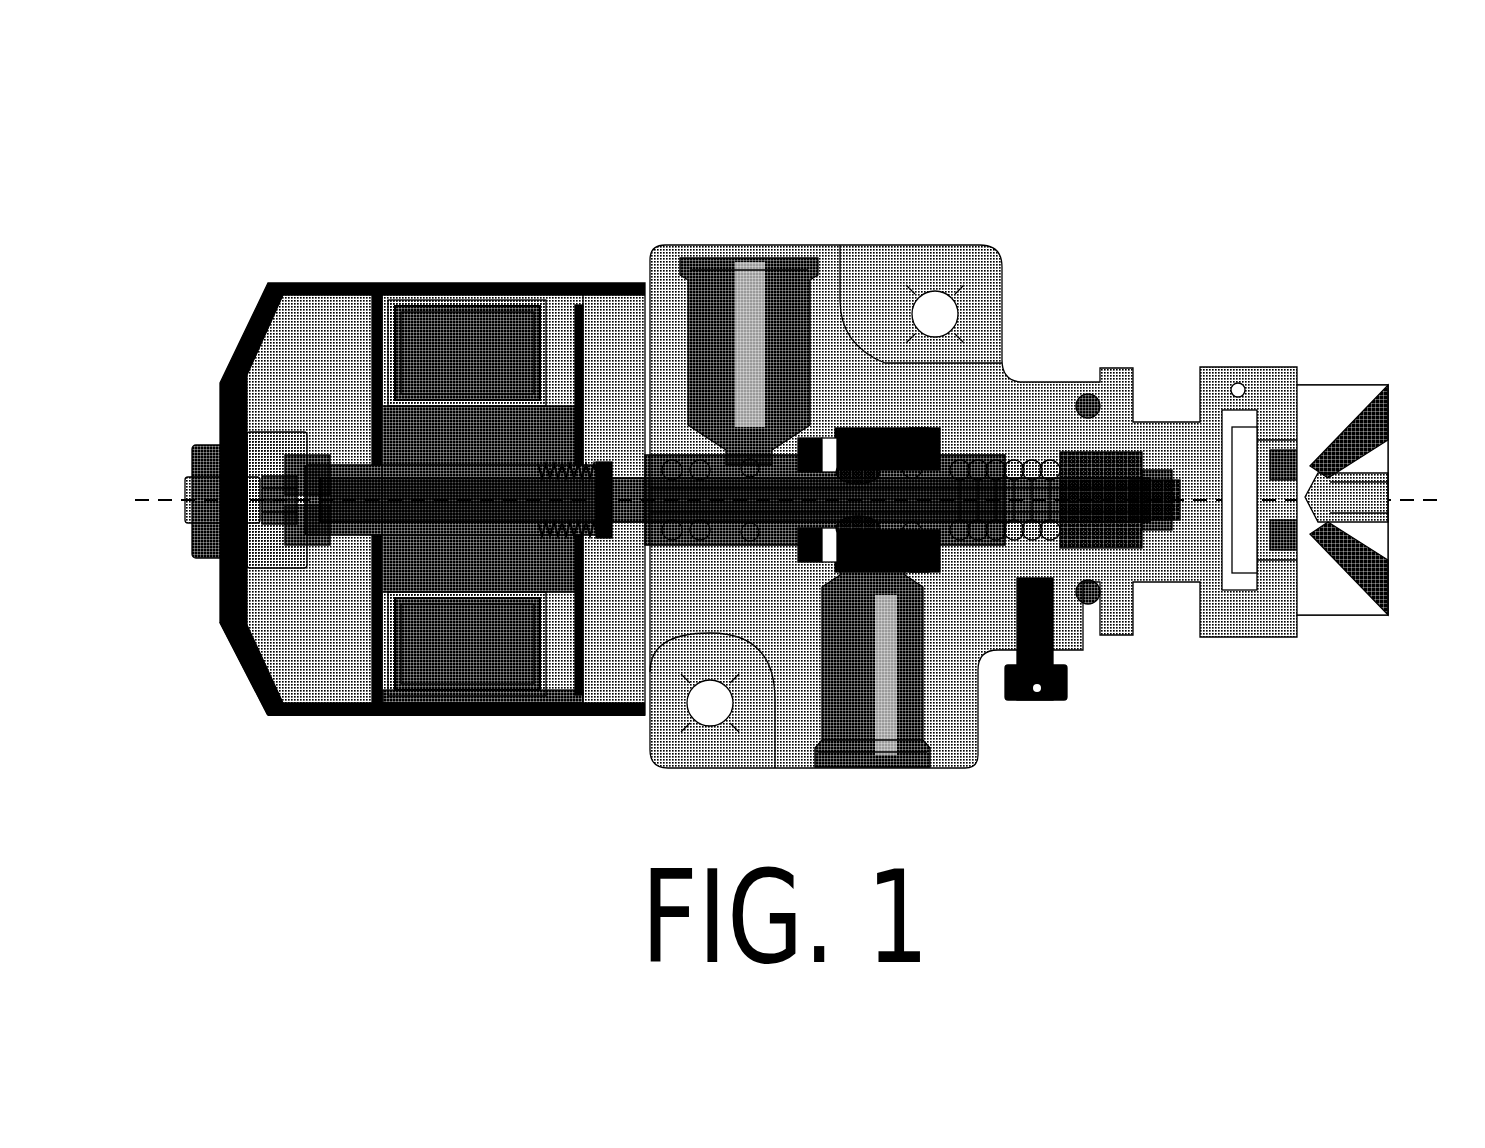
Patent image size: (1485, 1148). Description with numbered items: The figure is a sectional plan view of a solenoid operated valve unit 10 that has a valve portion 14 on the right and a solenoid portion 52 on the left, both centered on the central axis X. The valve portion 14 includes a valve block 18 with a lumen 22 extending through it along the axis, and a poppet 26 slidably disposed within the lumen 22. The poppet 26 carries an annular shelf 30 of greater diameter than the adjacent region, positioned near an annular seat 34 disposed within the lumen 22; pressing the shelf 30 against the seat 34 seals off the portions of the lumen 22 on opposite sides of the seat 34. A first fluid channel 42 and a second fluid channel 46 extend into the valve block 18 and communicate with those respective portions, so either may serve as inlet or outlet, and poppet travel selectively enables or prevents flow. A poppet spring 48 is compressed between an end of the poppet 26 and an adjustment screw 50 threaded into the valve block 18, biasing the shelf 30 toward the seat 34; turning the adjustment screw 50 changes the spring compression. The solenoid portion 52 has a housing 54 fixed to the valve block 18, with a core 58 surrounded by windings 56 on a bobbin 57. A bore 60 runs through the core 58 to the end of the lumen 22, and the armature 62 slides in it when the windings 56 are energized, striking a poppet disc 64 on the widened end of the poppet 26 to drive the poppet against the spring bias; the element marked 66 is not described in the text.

The solenoid operated valve unit 10 is at (570, 120).
The valve portion 14 is at (1170, 195).
The valve block 18 is at (978, 765).
The lumen 22 is at (733, 543).
The poppet 26 is at (787, 522).
The annular shelf 30 is at (858, 468).
The annular seat 34 is at (835, 438).
The first fluid channel 42 is at (749, 361).
The second fluid channel 46 is at (872, 650).
The poppet spring 48 is at (1030, 460).
The adjustment screw 50 is at (1106, 455).
The solenoid portion 52 is at (298, 208).
The housing 54 is at (237, 633).
The windings 56 is at (457, 332).
The bobbin 57 is at (497, 382).
The core 58 is at (410, 420).
The bore 60 is at (520, 672).
The armature 62 is at (298, 712).
The poppet disc 64 is at (601, 463).
The return spring 66 is at (551, 462).